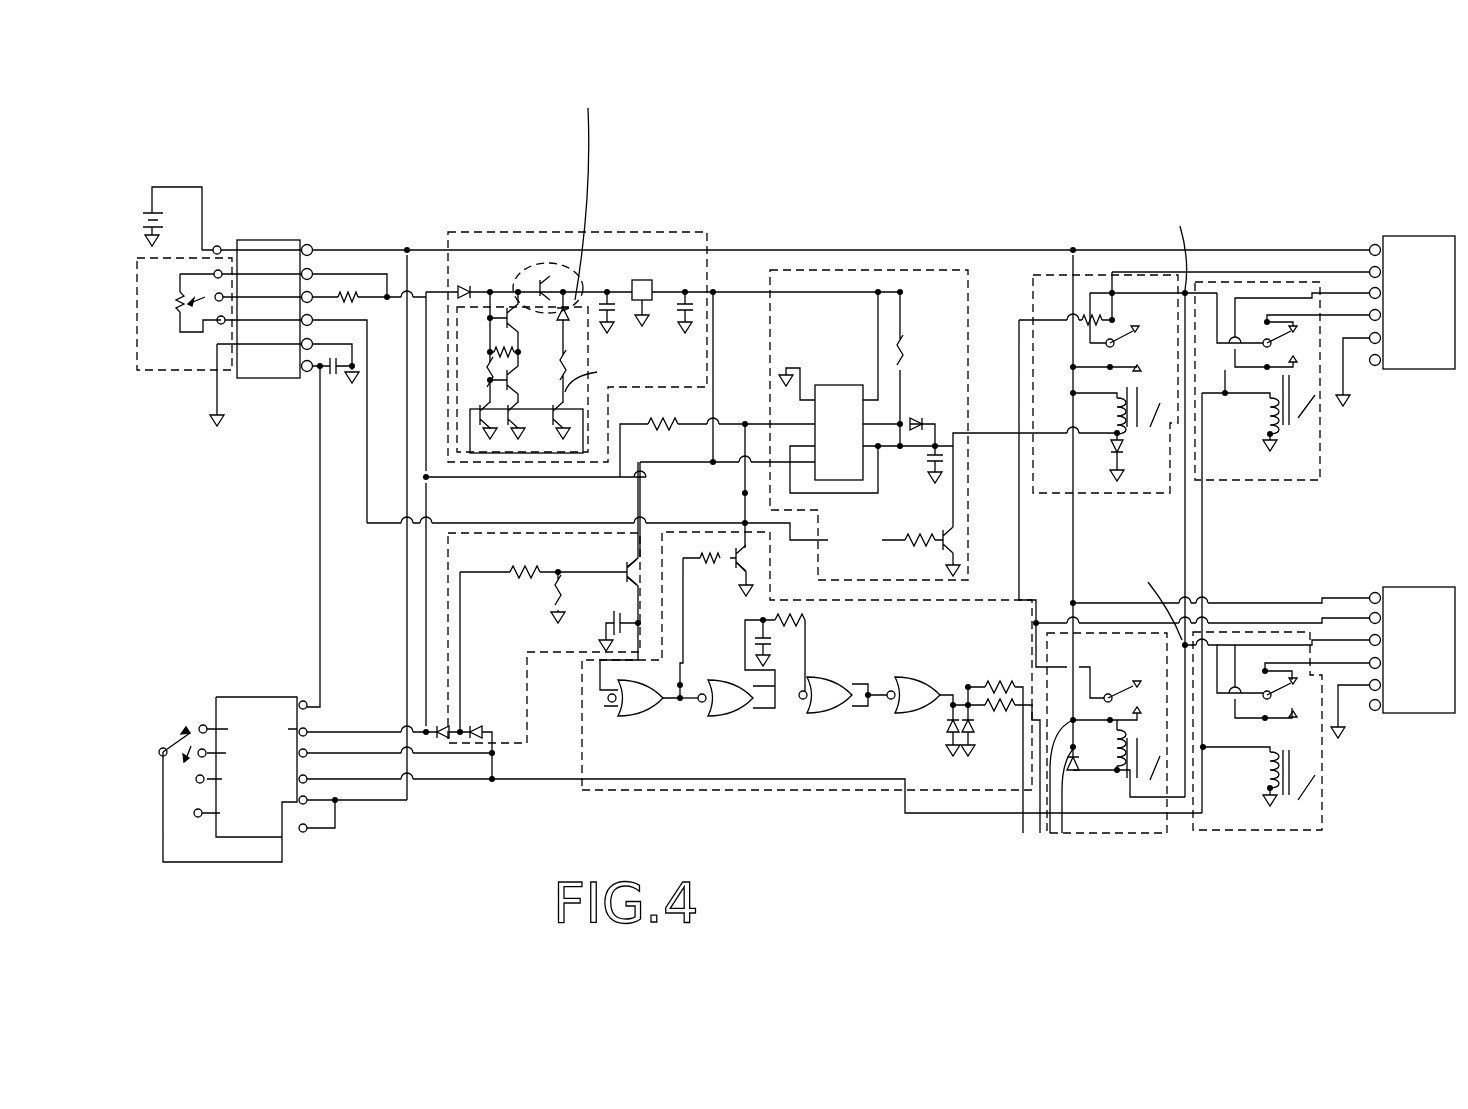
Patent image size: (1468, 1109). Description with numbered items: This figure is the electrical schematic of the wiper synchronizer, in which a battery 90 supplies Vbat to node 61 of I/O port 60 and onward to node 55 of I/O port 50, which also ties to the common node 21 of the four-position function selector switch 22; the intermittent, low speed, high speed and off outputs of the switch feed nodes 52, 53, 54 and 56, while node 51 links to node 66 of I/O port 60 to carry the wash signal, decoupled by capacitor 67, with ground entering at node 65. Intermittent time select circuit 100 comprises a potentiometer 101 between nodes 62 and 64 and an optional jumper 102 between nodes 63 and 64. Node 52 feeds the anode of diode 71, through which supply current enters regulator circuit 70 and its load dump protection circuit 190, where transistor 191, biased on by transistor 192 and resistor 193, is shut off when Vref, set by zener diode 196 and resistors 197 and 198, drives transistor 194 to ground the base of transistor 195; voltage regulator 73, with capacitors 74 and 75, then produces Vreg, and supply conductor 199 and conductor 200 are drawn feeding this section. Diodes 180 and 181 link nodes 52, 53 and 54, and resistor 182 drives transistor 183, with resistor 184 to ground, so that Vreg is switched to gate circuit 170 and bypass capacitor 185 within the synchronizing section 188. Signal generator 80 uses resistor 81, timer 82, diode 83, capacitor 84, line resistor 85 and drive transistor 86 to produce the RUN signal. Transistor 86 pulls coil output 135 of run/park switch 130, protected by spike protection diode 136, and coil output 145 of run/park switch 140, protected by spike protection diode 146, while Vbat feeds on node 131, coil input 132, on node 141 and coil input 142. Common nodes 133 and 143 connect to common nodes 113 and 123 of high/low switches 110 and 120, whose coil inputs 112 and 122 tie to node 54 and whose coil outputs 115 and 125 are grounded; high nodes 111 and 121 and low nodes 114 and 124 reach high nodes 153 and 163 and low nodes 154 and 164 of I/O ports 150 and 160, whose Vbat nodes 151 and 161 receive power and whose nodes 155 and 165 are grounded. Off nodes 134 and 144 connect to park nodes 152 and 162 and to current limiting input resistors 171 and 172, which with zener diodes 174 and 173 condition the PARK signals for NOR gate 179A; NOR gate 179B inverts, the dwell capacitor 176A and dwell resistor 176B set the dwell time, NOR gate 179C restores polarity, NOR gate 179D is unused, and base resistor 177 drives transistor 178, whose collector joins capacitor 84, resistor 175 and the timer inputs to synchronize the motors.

The common node 21 is at (163, 748).
The function selector switch 22 is at (190, 742).
The I/O port 50 is at (256, 832).
The node 51 is at (305, 701).
The node 52 is at (308, 729).
The node 53 is at (308, 750).
The node 54 is at (308, 776).
The node 55 is at (308, 830).
The node 56 is at (204, 815).
The I/O port 60 is at (258, 378).
The node 61 is at (305, 246).
The node 62 is at (308, 270).
The node 63 is at (311, 293).
The node 64 is at (314, 315).
The node 65 is at (315, 340).
The node 66 is at (306, 372).
The decoupling capacitor 67 is at (318, 392).
The regulator circuit 70 is at (690, 232).
The diode 71 is at (466, 285).
The voltage regulator 73 is at (640, 280).
The capacitor 74 is at (607, 300).
The capacitor 75 is at (685, 300).
The signal generator 80 is at (968, 275).
The resistor 81 is at (915, 420).
The timer 82 is at (835, 393).
The diode 83 is at (898, 352).
The capacitor 84 is at (942, 470).
The line resistor 85 is at (916, 538).
The drive transistor 86 is at (950, 566).
The battery 90 is at (146, 192).
The intermittent time select circuit 100 is at (176, 372).
The potentiometer 101 is at (175, 312).
The jumper 102 is at (182, 300).
The high/low switch 110 is at (1258, 482).
The high node 111 is at (1262, 368).
The coil input 112 is at (1268, 430).
The common node 113 is at (1238, 330).
The low node 114 is at (1265, 338).
The coil output 115 is at (1265, 447).
The high/low switch 120 is at (1290, 832).
The high node 121 is at (1265, 718).
The coil input 122 is at (1266, 782).
The common node 123 is at (1236, 684).
The low node 124 is at (1266, 690).
The coil output 125 is at (1240, 832).
The run/park switch 130 is at (1045, 495).
The on node 131 is at (922, 367).
The coil input 132 is at (918, 418).
The common node 133 is at (1135, 326).
The off node 134 is at (1110, 318).
The coil output 135 is at (1072, 368).
The spike protection diode 136 is at (1120, 450).
The run/park switch 140 is at (1168, 835).
The on node 141 is at (1050, 833).
The coil input 142 is at (1062, 833).
The common node 143 is at (1093, 660).
The off node 144 is at (1131, 680).
The coil output 145 is at (1117, 772).
The spike protection diode 146 is at (1080, 775).
The I/O port 150 is at (1410, 370).
The node 151 is at (1373, 246).
The park node 152 is at (1371, 269).
The high node 153 is at (1371, 291).
The low node 154 is at (1370, 313).
The node 155 is at (1379, 364).
The I/O port 160 is at (1425, 715).
The node 161 is at (1376, 595).
The park node 162 is at (1373, 614).
The high node 163 is at (1372, 637).
The low node 164 is at (1372, 660).
The node 165 is at (1374, 708).
The gate circuit 170 is at (688, 792).
The current limiting input resistor 171 is at (990, 684).
The current limiting input resistor 172 is at (992, 708).
The zener diode 173 is at (952, 752).
The zener diode 174 is at (970, 752).
The resistor 175 is at (658, 432).
The dwell capacitor 176A is at (688, 702).
The dwell resistor 176B is at (800, 614).
The base resistor 177 is at (740, 525).
The transistor 178 is at (733, 565).
The NOR gate 179A is at (912, 718).
The NOR gate 179B is at (822, 714).
The NOR gate 179C is at (738, 714).
The NOR gate 179D is at (668, 714).
The diode 180 is at (443, 740).
The diode 181 is at (478, 727).
The resistor 182 is at (513, 570).
The transistor 183 is at (620, 570).
The resistor 184 is at (562, 588).
The bypass capacitor 185 is at (603, 622).
The synchronizing circuit 188 is at (568, 792).
The load dump protection circuit 190 is at (563, 300).
The transistor 191 is at (538, 290).
The transistor 192 is at (505, 315).
The resistor 193 is at (480, 330).
The transistor 194 is at (490, 432).
The transistor 195 is at (520, 432).
The zener diode 196 is at (550, 263).
The resistor 197 is at (612, 406).
The resistor 198 is at (563, 432).
The conductor 199 is at (500, 385).
The conductor 200 is at (505, 378).